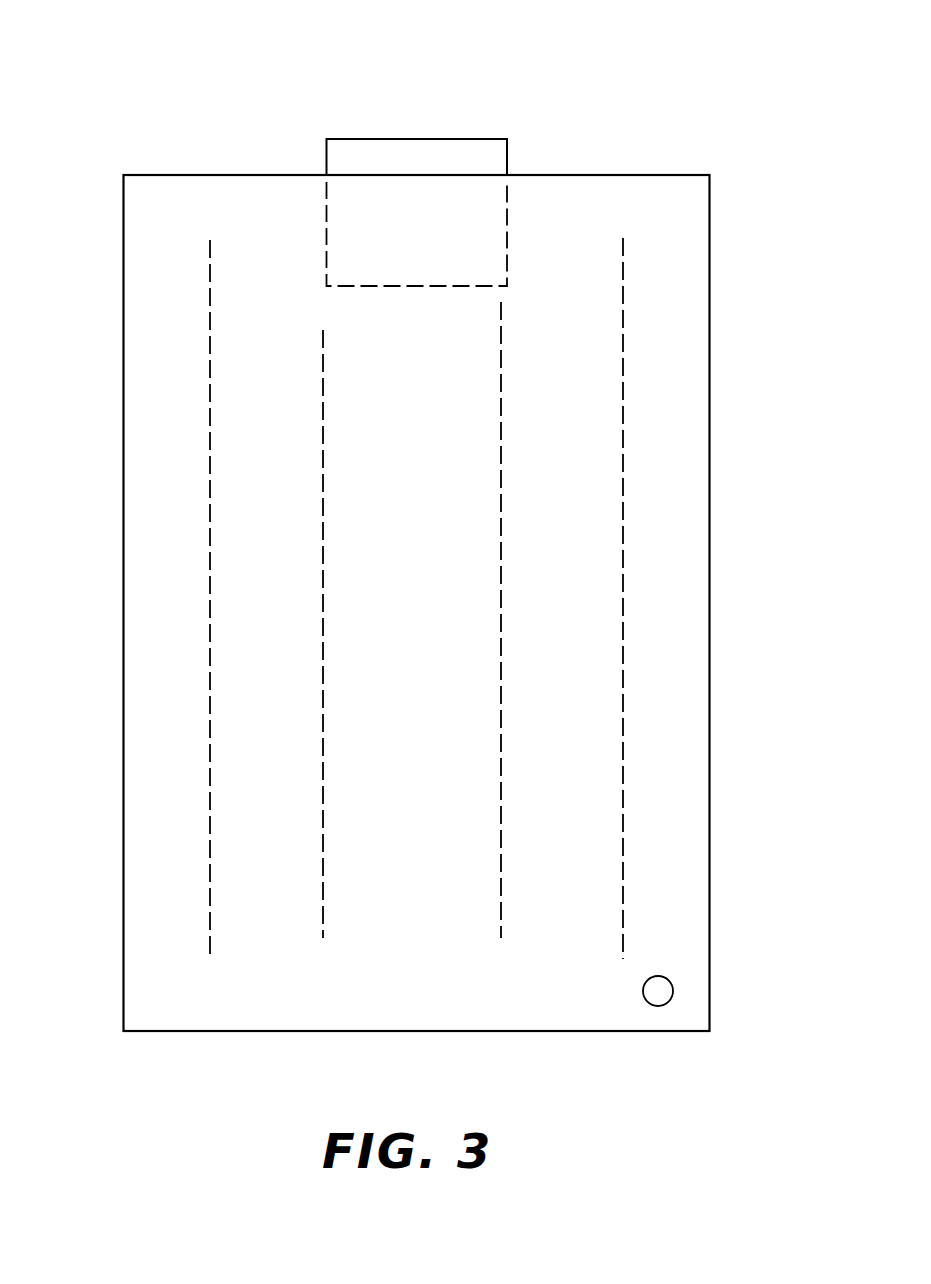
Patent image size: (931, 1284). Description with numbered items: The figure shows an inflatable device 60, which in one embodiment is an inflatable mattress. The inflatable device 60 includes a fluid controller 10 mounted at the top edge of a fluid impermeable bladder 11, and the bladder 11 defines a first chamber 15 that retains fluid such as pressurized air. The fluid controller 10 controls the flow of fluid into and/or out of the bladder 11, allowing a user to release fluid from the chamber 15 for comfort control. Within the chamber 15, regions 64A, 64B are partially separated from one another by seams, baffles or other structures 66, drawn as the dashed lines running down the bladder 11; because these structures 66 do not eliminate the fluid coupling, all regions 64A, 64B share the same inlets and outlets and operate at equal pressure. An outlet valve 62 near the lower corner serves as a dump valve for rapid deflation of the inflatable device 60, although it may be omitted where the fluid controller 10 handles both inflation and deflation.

The inflatable device 60 is at (221, 84).
The fluid controller 10 is at (507, 139).
The fluid impermeable bladder 11 is at (709, 175).
The first chamber 15 is at (176, 251).
The region 64A is at (178, 763).
The region 64B is at (255, 916).
The seams, baffles or other structures 66 is at (623, 284).
The outlet valve 62 is at (670, 980).